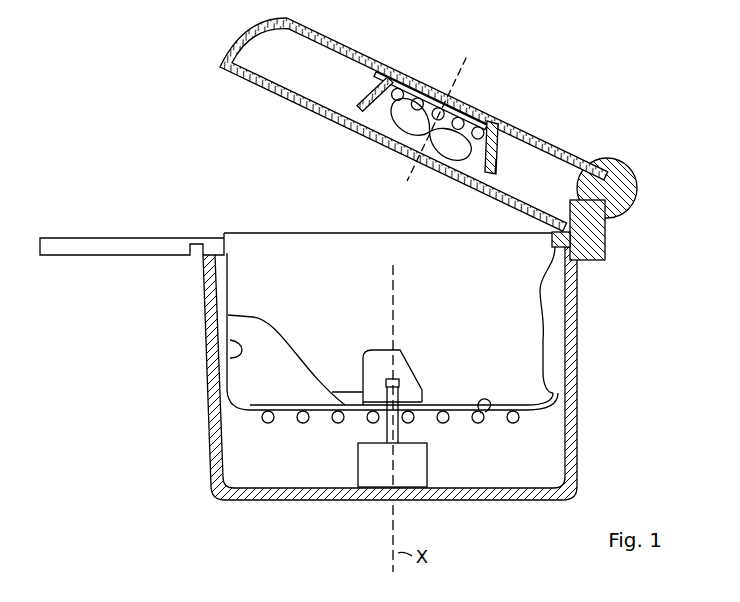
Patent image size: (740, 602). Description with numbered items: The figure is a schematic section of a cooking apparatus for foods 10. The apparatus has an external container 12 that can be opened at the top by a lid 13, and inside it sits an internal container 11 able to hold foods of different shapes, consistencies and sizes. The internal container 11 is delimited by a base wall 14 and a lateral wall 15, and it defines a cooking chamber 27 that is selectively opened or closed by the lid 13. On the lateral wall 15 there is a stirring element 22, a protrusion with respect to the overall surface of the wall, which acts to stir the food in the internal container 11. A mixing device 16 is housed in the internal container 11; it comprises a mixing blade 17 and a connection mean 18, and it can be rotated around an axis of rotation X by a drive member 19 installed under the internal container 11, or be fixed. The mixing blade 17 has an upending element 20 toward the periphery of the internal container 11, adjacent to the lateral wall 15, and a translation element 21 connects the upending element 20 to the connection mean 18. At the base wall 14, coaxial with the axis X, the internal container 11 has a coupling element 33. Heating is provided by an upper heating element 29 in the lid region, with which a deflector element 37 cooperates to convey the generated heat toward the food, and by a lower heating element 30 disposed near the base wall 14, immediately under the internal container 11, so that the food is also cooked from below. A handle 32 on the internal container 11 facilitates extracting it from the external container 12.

The cooking apparatus for foods 10 is at (174, 167).
The internal container 11 is at (562, 396).
The external container 12 is at (572, 370).
The lid 13 is at (417, 129).
The base wall 14 is at (481, 413).
The lateral wall 15 is at (230, 340).
The mixing device 16 is at (409, 340).
The mixing blade 17 is at (307, 359).
The connection mean 18 is at (411, 384).
The drive member 19 is at (375, 479).
The upending element 20 is at (262, 314).
The translation element 21 is at (354, 414).
The stirring element 22 is at (540, 328).
The cooking chamber 27 is at (260, 261).
The upper heating element 29 is at (490, 123).
The lower heating element 30 is at (298, 429).
The handle 32 is at (115, 246).
The coupling element 33 is at (389, 378).
The deflector element 37 is at (495, 153).